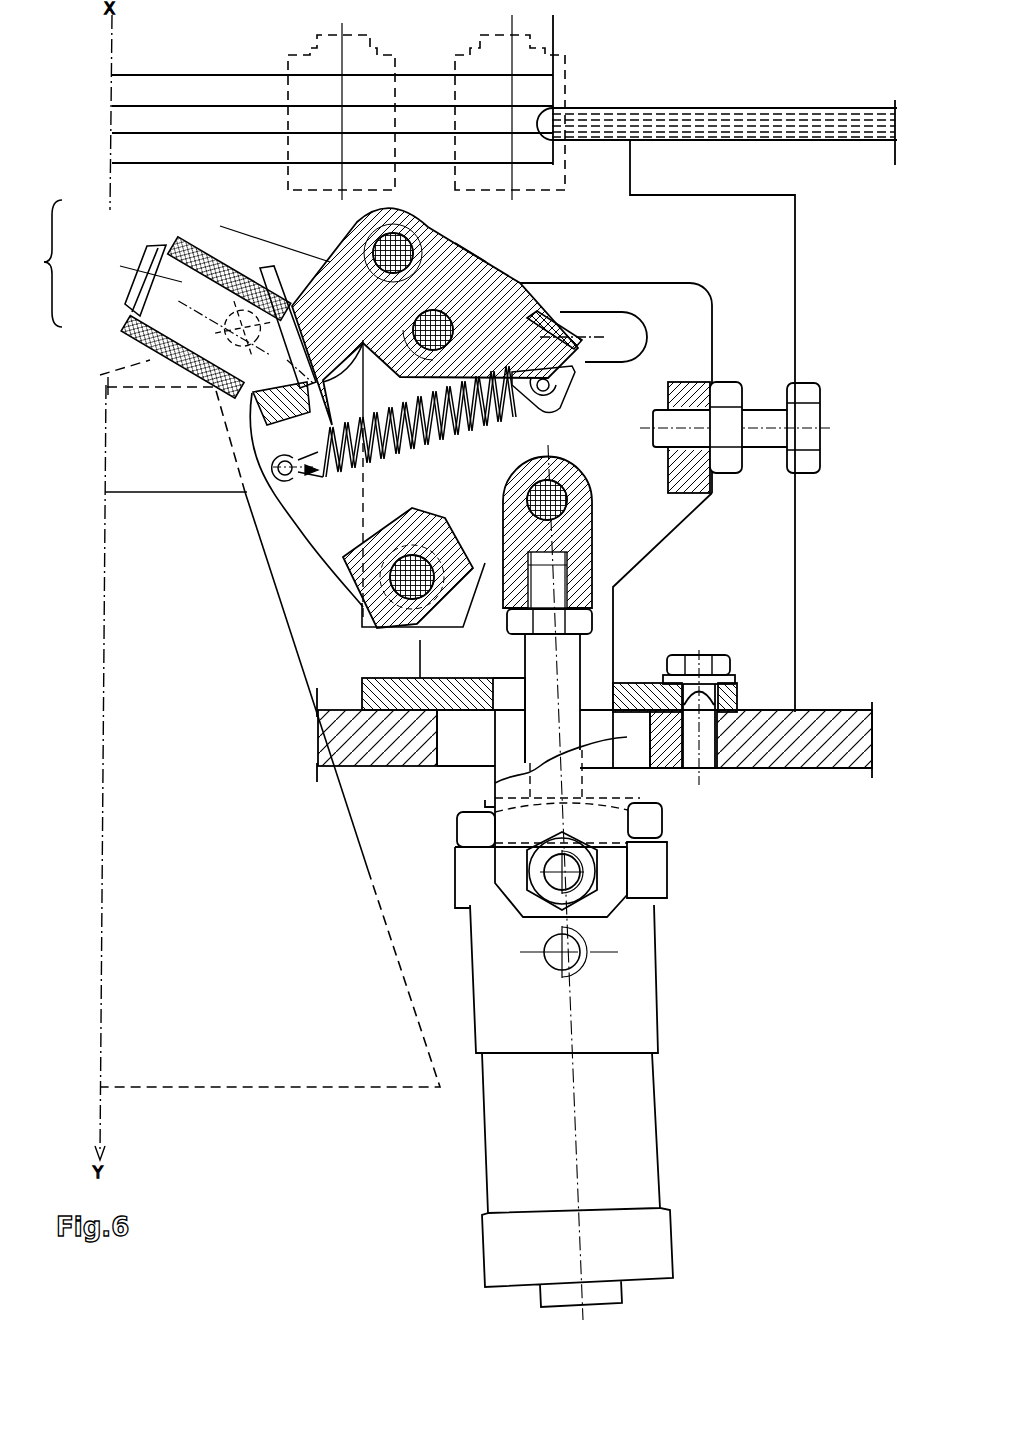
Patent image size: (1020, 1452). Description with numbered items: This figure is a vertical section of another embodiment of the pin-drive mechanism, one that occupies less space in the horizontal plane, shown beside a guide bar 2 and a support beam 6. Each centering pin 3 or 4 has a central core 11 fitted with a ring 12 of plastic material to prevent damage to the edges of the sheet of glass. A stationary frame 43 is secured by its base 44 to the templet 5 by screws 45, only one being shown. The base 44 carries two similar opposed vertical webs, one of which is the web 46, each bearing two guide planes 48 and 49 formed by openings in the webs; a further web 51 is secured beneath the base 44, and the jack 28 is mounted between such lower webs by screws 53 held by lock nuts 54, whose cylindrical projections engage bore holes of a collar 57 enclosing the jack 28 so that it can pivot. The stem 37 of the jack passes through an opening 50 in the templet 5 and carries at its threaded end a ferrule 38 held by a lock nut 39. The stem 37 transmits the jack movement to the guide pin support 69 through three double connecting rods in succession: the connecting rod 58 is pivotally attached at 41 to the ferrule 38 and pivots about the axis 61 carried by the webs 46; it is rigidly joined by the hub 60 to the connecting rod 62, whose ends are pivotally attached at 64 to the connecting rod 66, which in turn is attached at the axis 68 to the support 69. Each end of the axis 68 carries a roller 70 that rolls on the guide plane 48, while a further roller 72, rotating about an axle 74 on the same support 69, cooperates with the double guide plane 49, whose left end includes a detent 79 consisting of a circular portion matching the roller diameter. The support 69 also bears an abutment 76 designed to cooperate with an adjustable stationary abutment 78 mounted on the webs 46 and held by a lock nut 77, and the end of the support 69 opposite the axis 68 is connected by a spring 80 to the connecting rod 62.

The guide bar 2 is at (822, 123).
The centering pin 3 is at (49, 229).
The centering pin 4 is at (49, 295).
The templet 5 is at (344, 797).
The support beam 6 is at (255, 85).
The central core 11 is at (168, 257).
The ring 12 is at (128, 327).
The jack 28 is at (620, 1105).
The stem 37 is at (800, 733).
The ferrule 38 is at (575, 532).
The lock nut 39 is at (600, 620).
The pivot attachment 41 is at (497, 500).
The stationary frame 43 is at (335, 690).
The base 44 is at (437, 740).
The screw 45 is at (707, 665).
The vertical web 46 is at (687, 358).
The guide plane 48 is at (605, 277).
The guide plane 49 is at (588, 317).
The opening 50 is at (482, 742).
The web 51 is at (505, 745).
The screw 53 is at (578, 865).
The lock nut 54 is at (595, 877).
The collar 57 is at (645, 887).
The connecting rod 58 is at (418, 640).
The hub 60 is at (587, 473).
The axis 61 is at (485, 563).
The connecting rod 62 is at (323, 513).
The pivot attachment 64 is at (200, 350).
The connecting rod 66 is at (340, 240).
The axis 68 is at (373, 247).
The guide pin support 69 is at (478, 315).
The roller 70 is at (292, 262).
The roller 72 is at (470, 250).
The axle 74 is at (505, 292).
The abutment 76 is at (563, 333).
The lock nut 77 is at (812, 398).
The adjustable stationary abutment 78 is at (692, 435).
The detent 79 is at (300, 402).
The spring 80 is at (272, 478).